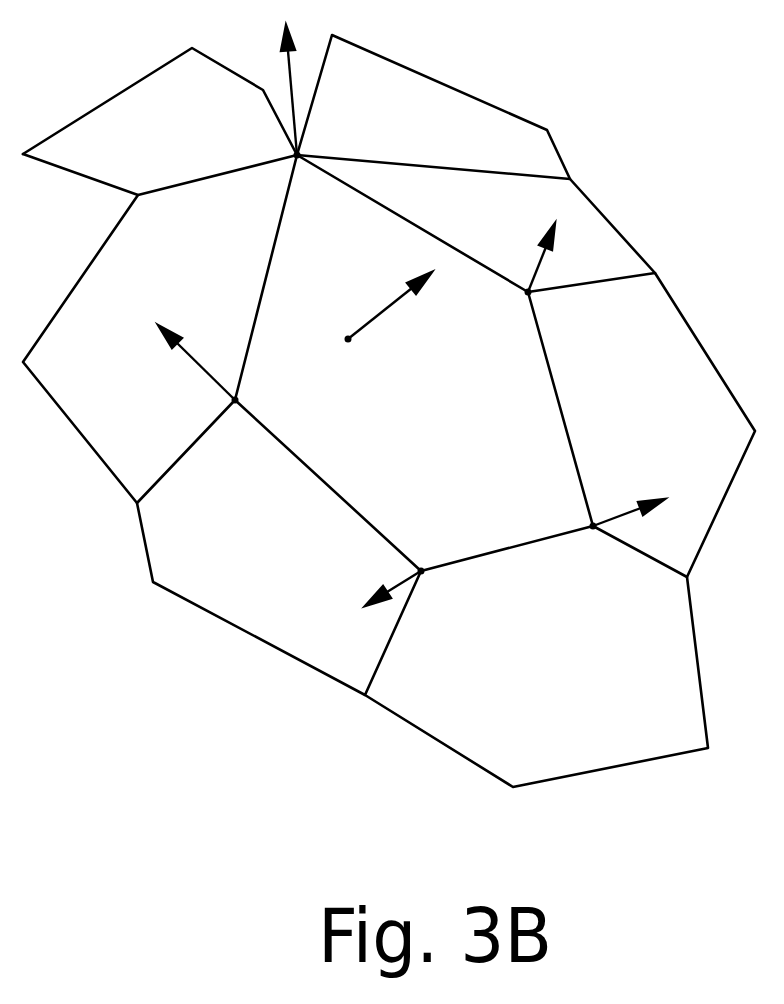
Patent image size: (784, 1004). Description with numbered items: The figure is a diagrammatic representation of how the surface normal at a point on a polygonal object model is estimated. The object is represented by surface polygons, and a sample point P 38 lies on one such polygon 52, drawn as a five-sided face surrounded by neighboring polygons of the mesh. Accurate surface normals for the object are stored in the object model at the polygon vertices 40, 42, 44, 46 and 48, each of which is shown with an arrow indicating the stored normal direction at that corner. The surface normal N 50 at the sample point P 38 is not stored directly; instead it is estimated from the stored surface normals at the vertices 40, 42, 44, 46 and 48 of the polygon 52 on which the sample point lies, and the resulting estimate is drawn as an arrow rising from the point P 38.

The sample point P 38 is at (314, 365).
The polygon vertex 40 is at (315, 92).
The polygon vertex 42 is at (560, 277).
The polygon vertex 44 is at (613, 538).
The polygon vertex 46 is at (377, 581).
The polygon vertex 48 is at (198, 373).
The surface normal N 50 is at (425, 316).
The polygon 52 is at (414, 363).